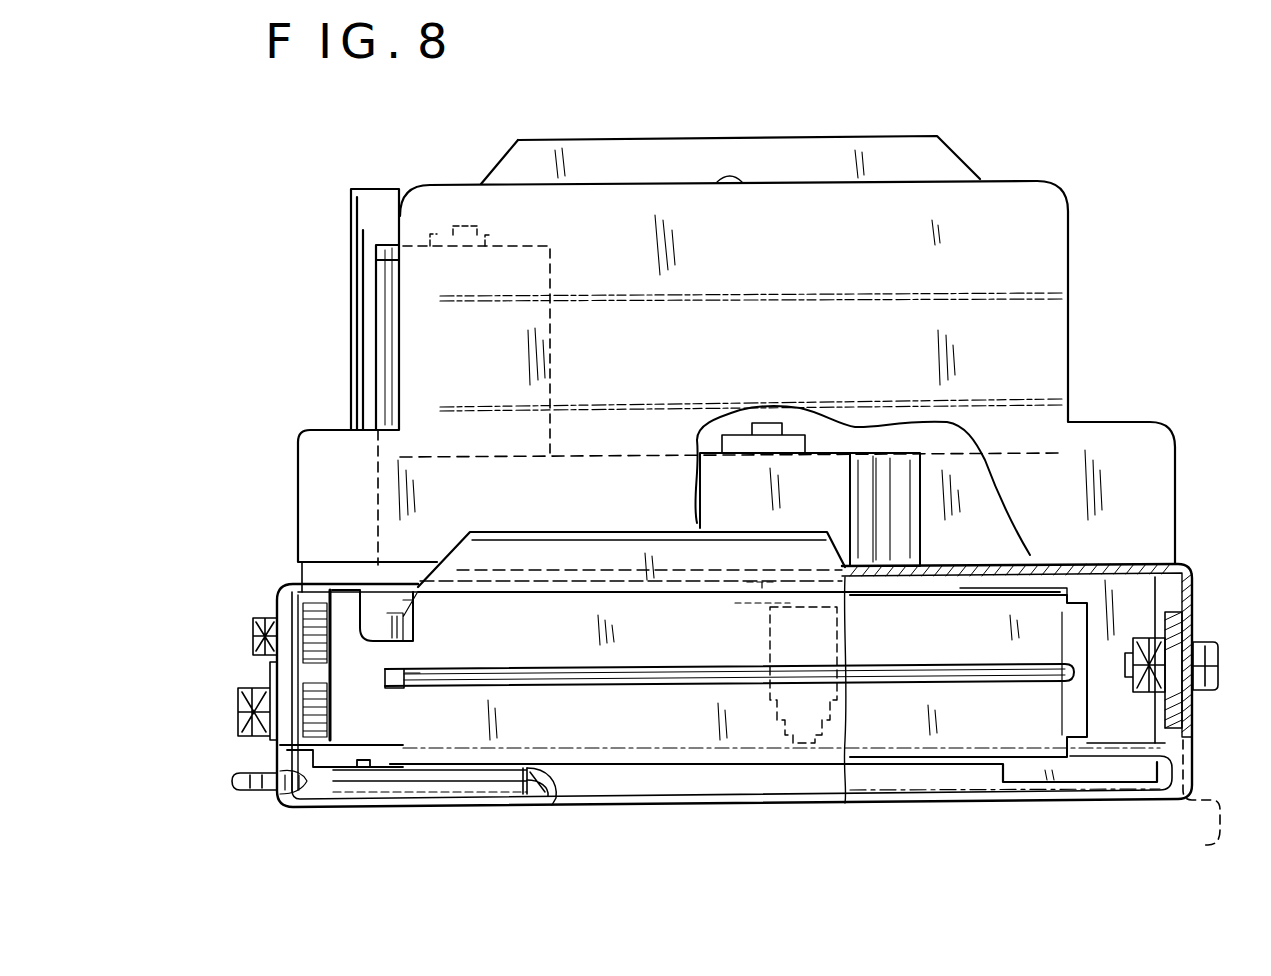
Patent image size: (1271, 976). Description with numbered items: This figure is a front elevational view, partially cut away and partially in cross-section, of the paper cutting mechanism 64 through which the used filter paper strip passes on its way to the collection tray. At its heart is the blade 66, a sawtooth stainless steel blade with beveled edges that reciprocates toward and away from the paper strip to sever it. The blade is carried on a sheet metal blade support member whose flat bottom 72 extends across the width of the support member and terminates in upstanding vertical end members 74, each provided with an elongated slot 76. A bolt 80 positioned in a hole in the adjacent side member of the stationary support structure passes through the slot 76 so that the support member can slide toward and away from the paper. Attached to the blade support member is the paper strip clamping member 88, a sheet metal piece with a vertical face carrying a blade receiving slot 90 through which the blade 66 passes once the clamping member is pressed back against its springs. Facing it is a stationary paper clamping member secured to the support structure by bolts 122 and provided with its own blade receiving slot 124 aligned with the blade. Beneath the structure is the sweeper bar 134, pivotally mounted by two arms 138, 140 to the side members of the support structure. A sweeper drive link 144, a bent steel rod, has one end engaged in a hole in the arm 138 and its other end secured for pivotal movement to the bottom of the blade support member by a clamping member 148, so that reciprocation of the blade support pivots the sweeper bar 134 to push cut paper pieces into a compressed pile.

The paper cutting mechanism 64 is at (736, 458).
The blade 66 is at (1032, 683).
The flat bottom 72 is at (718, 802).
The vertical end members 74 is at (305, 760).
The elongated slots 76 is at (1198, 628).
The bolt 80 is at (1218, 670).
The paper strip clamping member 88 is at (1105, 750).
The blade receiving slot 90 is at (1100, 812).
The bolts 122 is at (267, 700).
The blade receiving slot 124 is at (413, 688).
The sweeper bar 134 is at (508, 803).
The arm 138 is at (271, 805).
The arm 140 is at (1213, 836).
The sweeper drive link 144 is at (232, 782).
The clamping member 148 is at (557, 792).